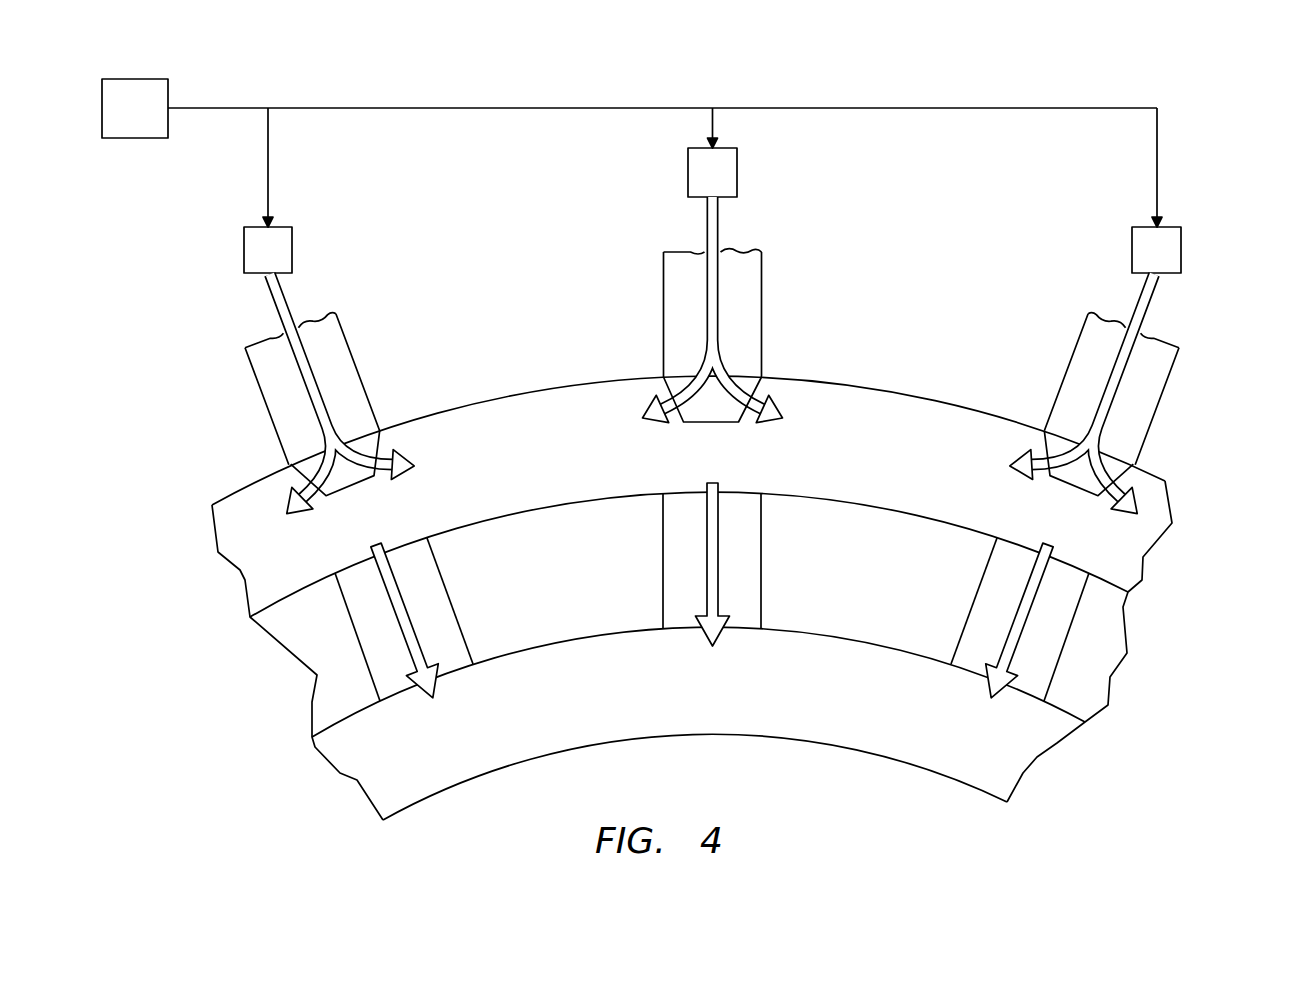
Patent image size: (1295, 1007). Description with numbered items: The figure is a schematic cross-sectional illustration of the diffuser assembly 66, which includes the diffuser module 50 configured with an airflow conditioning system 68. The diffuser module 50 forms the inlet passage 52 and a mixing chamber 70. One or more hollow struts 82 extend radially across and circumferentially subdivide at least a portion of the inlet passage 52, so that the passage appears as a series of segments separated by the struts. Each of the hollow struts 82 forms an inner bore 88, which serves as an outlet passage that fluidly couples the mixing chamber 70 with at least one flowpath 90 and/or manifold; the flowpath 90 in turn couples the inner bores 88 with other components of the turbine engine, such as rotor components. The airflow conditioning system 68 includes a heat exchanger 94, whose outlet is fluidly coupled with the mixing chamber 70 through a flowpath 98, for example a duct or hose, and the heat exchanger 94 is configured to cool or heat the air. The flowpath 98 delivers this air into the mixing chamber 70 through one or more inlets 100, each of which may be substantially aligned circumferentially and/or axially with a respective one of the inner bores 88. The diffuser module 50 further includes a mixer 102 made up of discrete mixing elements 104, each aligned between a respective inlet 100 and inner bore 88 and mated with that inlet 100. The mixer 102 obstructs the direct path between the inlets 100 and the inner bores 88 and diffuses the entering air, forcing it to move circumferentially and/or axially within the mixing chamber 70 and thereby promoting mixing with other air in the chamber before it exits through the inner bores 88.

The diffuser module 50 is at (888, 390).
The inlet passage 52 is at (333, 641).
The diffuser assembly 66 is at (1180, 123).
The airflow conditioning system 68 is at (943, 100).
The mixing chamber 70 is at (543, 483).
The hollow strut 82 is at (460, 617).
The inner bore 88 is at (393, 638).
The flowpath 90 is at (645, 718).
The heat exchanger 94 is at (150, 122).
The flowpath 98 is at (527, 108).
The inlet 100 is at (350, 367).
The mixer 102 is at (338, 503).
The mixing element 104 is at (370, 486).